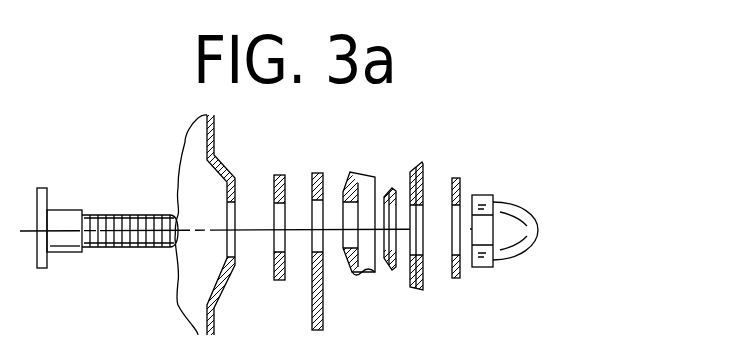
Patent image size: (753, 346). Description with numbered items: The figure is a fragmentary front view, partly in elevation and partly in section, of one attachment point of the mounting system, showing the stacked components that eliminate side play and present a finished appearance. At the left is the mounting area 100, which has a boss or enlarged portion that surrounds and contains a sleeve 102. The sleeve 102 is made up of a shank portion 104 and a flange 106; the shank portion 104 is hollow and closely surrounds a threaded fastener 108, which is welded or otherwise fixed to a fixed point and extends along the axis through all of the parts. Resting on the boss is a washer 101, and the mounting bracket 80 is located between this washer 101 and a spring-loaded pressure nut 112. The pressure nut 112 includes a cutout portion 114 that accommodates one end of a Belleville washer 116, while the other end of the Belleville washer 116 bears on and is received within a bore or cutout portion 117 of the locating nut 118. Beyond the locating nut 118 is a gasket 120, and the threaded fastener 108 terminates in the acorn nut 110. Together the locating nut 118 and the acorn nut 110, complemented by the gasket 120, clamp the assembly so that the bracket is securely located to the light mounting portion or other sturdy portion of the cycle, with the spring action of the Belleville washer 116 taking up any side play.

The mounting bracket 80 is at (316, 174).
The mounting area 100 is at (213, 157).
The washer 101 is at (278, 281).
The sleeve 102 is at (105, 218).
The shank portion 104 is at (60, 253).
The flange 106 is at (42, 200).
The threaded fastener 108 is at (125, 248).
The acorn nut 110 is at (505, 210).
The spring-loaded pressure nut 112 is at (362, 211).
The cutout portion 114 is at (380, 266).
The Belleville washer 116 is at (391, 270).
The bore or cutout portion 117 is at (425, 226).
The locating nut 118 is at (418, 289).
The gasket 120 is at (458, 186).